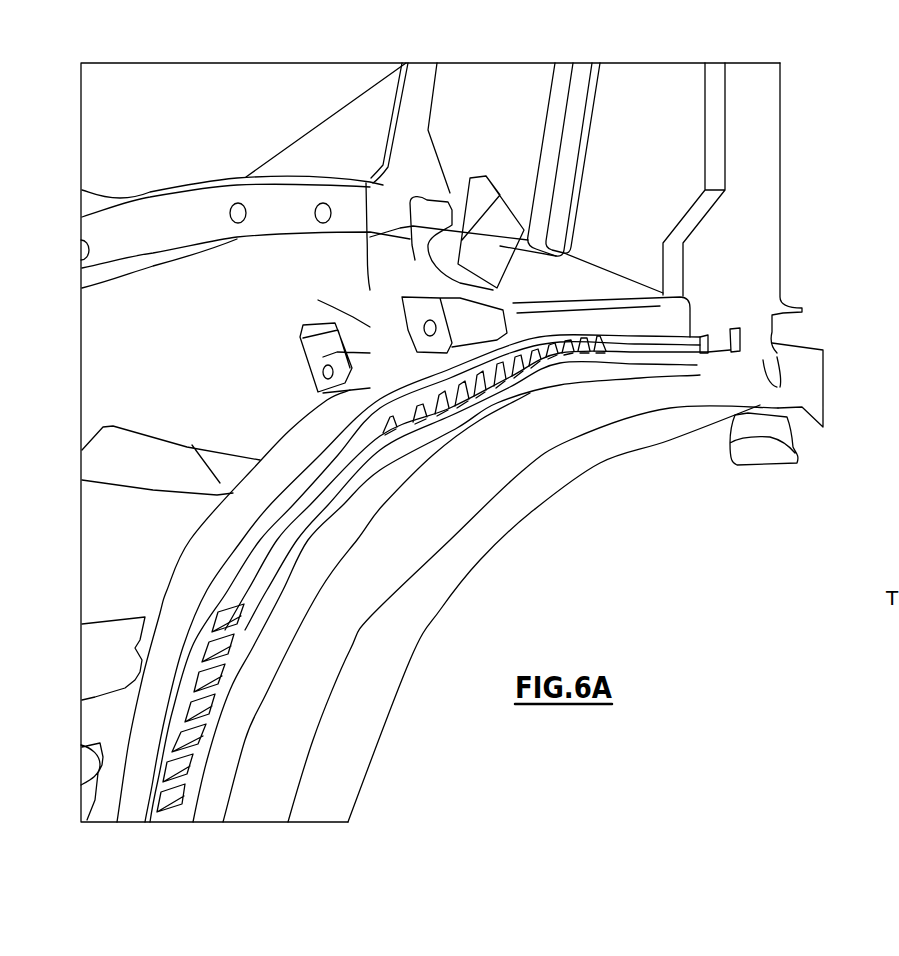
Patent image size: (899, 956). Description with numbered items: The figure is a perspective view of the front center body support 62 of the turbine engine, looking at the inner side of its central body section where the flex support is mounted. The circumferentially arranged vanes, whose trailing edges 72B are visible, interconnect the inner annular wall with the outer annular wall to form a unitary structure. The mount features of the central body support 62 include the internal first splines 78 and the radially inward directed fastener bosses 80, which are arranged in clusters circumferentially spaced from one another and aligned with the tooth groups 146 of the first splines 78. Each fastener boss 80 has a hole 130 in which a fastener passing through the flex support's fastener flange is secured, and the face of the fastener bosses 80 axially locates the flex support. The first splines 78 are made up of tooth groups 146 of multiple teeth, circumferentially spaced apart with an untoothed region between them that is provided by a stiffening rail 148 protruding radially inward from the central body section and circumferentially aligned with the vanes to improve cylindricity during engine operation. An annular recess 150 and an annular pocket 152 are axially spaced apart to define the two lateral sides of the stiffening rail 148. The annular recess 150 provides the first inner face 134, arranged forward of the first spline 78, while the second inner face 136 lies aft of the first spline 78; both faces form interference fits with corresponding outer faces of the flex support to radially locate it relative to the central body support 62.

The front center body support 62 is at (492, 100).
The trailing edge 72B is at (740, 103).
The first splines 78 is at (523, 360).
The fastener bosses 80 is at (402, 297).
The holes 130 is at (323, 368).
The first inner face 134 is at (697, 345).
The second inner face 136 is at (780, 383).
The tooth groups 146 is at (493, 405).
The stiffening rail 148 is at (715, 343).
The annular recess 150 is at (702, 332).
The annular pocket 152 is at (738, 327).